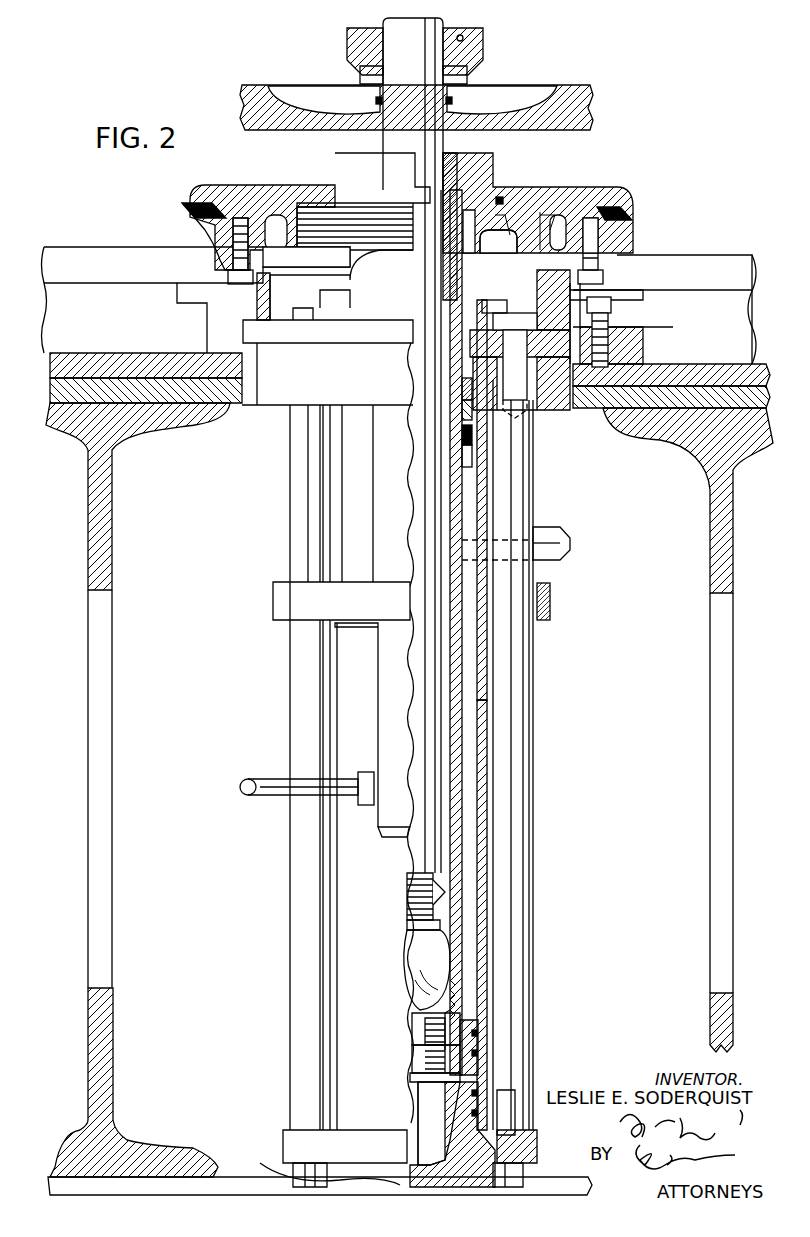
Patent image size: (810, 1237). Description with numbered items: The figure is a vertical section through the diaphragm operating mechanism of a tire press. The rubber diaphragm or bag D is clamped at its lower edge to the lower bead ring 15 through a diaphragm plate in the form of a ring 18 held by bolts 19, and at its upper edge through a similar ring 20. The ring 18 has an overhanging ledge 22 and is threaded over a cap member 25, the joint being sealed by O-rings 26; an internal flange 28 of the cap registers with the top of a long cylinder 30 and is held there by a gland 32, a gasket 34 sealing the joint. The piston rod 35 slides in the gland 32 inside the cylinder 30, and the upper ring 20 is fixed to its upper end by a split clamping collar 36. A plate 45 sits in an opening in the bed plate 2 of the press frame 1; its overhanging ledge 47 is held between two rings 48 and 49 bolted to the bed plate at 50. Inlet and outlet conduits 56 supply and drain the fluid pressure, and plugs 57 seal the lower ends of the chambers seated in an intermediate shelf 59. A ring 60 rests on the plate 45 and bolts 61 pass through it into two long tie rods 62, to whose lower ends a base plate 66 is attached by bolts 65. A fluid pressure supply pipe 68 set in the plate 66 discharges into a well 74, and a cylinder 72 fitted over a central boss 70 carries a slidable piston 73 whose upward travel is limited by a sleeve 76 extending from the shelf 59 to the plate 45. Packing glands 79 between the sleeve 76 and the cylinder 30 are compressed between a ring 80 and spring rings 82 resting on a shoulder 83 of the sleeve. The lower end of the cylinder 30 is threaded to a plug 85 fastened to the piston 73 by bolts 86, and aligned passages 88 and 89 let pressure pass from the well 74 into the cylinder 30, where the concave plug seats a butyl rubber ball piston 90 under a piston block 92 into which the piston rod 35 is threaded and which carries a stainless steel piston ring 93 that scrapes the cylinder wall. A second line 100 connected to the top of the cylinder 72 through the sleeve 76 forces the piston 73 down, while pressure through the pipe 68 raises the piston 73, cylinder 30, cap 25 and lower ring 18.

The housing 1 is at (46, 398).
The upper frame member 2 is at (44, 318).
The diaphragm or bag D is at (212, 205).
The lower bead ring 15 is at (210, 222).
The lower diaphragm ring 18 is at (212, 190).
The bolts 19 is at (232, 272).
The upper diaphragm ring 20 is at (580, 118).
The overhanging ledge 22 is at (318, 195).
The cap member 25 is at (512, 212).
The O-rings 26 is at (500, 197).
The internal flange 28 is at (495, 188).
The cylinder 30 is at (470, 533).
The gland 32 is at (478, 165).
The gasket 34 is at (478, 255).
The piston rod 35 is at (415, 88).
The split clamping collar 36 is at (350, 50).
The plate 45 is at (545, 412).
The overhanging ledge 47 is at (600, 335).
The ring 48 is at (627, 313).
The ring 49 is at (612, 353).
The bolts 50 is at (603, 303).
The inlet and outlet conduits 56 is at (248, 795).
The plugs 57 is at (393, 840).
The intermediate shelf 59 is at (550, 603).
The ring 60 is at (520, 320).
The bolts 61 is at (508, 310).
The tie rods 62 is at (293, 677).
The bolts 65 is at (288, 1168).
The base plate 66 is at (536, 1148).
The fluid pressure supply pipe 68 is at (410, 1110).
The central boss 70 is at (478, 1090).
The cylinder 72 is at (486, 890).
The piston 73 is at (478, 1027).
The well 74 is at (500, 1095).
The sleeve 76 is at (482, 490).
The packing glands 79 is at (462, 408).
The ring 80 is at (452, 330).
The spring rings 82 is at (462, 437).
The shoulder 83 is at (462, 463).
The plug 85 is at (448, 1010).
The bolts 86 is at (437, 1123).
The passage 88 is at (412, 1055).
The passage 89 is at (412, 1030).
The ball-type piston 90 is at (407, 958).
The piston block 92 is at (407, 925).
The piston ring 93 is at (407, 897).
The line 100 is at (570, 545).